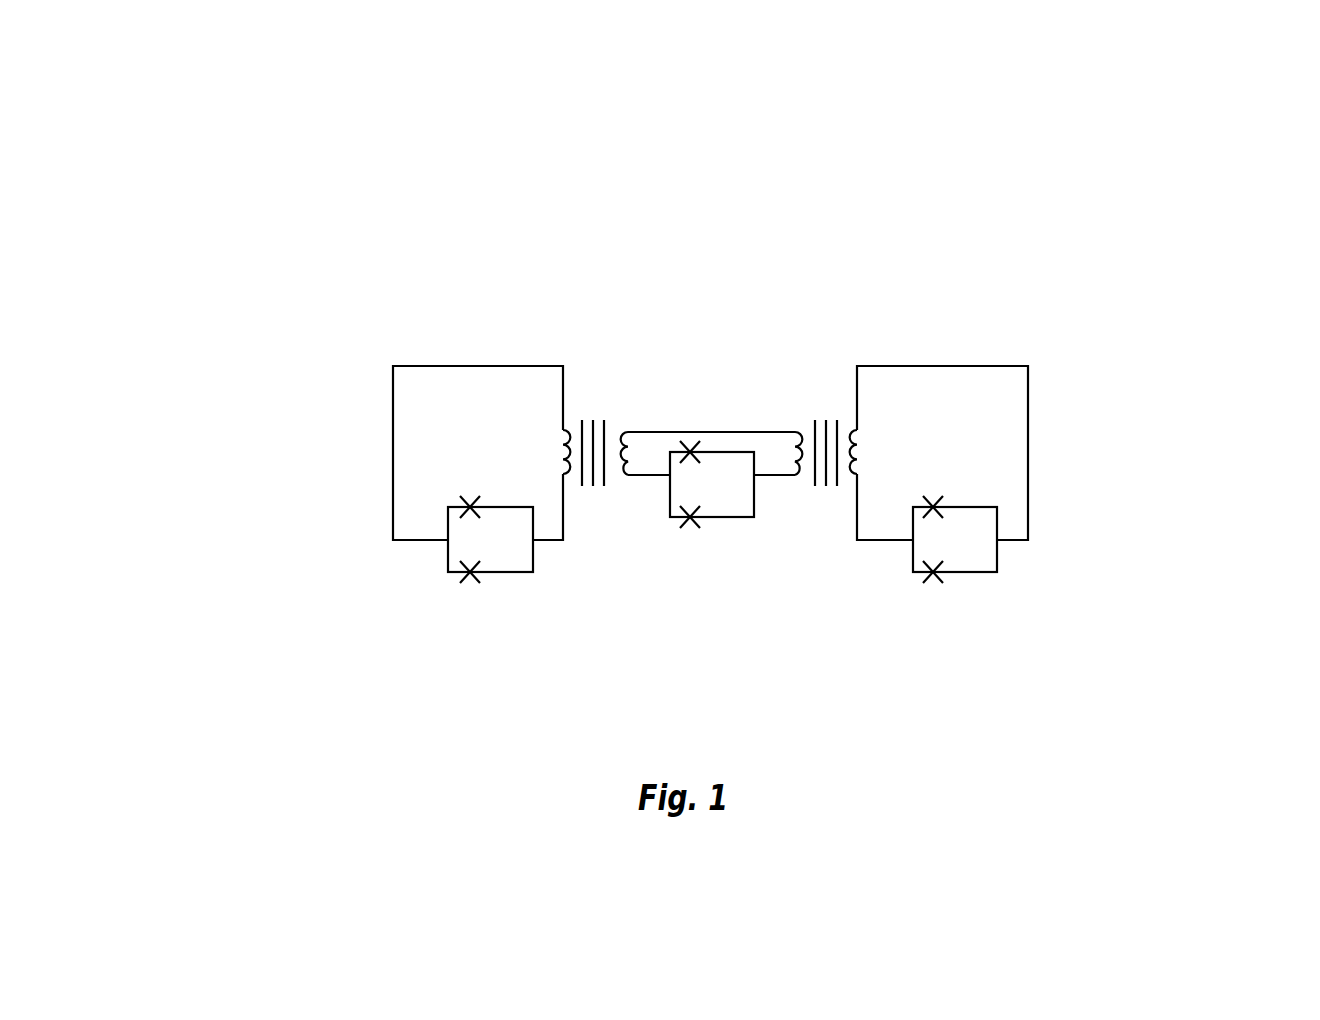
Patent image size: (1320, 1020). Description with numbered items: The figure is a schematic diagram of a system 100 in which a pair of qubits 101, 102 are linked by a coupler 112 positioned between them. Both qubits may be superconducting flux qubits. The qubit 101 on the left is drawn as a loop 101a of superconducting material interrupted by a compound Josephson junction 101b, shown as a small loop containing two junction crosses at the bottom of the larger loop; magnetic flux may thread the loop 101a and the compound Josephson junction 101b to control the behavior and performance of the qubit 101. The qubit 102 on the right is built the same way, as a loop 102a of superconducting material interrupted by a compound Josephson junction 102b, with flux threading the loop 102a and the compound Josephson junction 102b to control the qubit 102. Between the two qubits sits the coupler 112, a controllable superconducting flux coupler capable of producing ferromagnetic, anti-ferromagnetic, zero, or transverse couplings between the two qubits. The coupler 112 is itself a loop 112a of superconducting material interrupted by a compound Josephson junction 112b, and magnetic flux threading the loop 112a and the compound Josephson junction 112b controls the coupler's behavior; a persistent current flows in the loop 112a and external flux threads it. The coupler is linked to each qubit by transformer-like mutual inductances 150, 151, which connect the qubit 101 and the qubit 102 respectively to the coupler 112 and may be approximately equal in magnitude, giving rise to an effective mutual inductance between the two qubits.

The system 100 is at (860, 642).
The qubit 101 is at (428, 342).
The loop 101a is at (490, 363).
The compound Josephson junction 101b is at (447, 573).
The qubit 102 is at (996, 340).
The loop 102a is at (932, 365).
The compound Josephson junction 102b is at (987, 573).
The coupler 112 is at (692, 408).
The loop 112a is at (740, 428).
The compound Josephson junction 112b is at (670, 518).
The mutual inductance 150 is at (597, 417).
The mutual inductance 151 is at (826, 418).